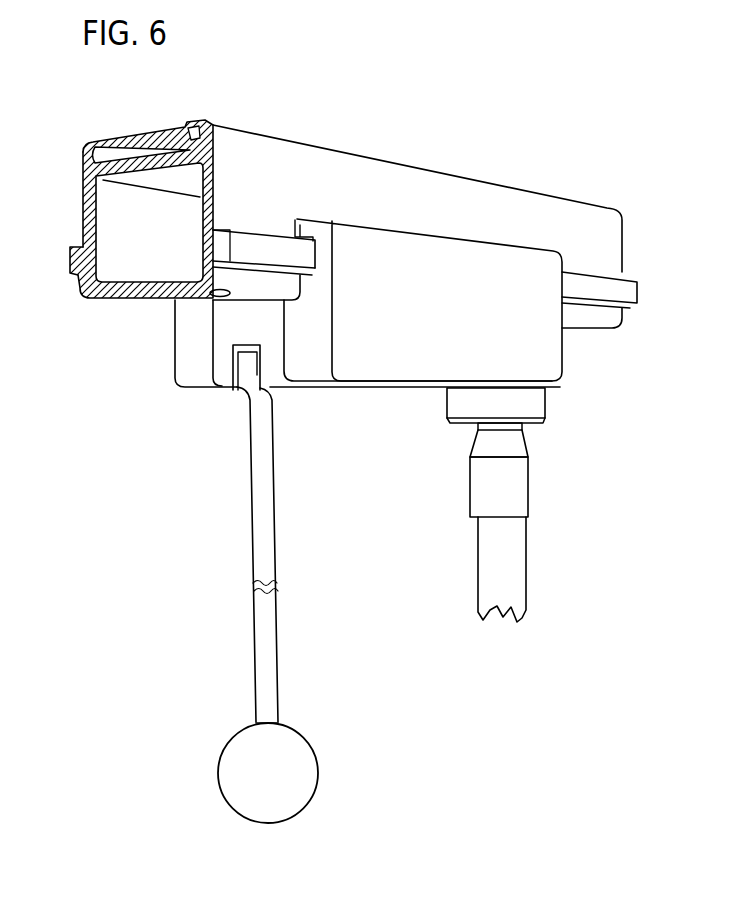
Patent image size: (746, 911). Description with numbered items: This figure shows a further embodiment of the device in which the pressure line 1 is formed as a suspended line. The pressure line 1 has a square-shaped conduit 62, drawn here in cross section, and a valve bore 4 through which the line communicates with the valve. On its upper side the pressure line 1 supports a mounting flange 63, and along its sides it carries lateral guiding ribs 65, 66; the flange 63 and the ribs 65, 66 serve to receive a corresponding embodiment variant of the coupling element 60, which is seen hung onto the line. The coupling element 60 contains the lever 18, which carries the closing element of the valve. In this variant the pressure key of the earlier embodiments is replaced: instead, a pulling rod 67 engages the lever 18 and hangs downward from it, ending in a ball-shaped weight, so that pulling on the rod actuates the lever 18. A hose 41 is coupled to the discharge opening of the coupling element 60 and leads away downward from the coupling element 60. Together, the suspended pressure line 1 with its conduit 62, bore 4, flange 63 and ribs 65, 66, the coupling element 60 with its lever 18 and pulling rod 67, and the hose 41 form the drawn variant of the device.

The pressure line 1 is at (400, 155).
The valve bore 4 is at (213, 298).
The lever 18 is at (192, 365).
The hose 41 is at (510, 543).
The coupling element 60 is at (448, 322).
The square-shaped conduit 62 is at (117, 208).
The mounting flange 63 is at (105, 158).
The lateral guiding rib 65 is at (73, 274).
The lateral guiding rib 66 is at (223, 230).
The pendulum rod 67 is at (263, 542).